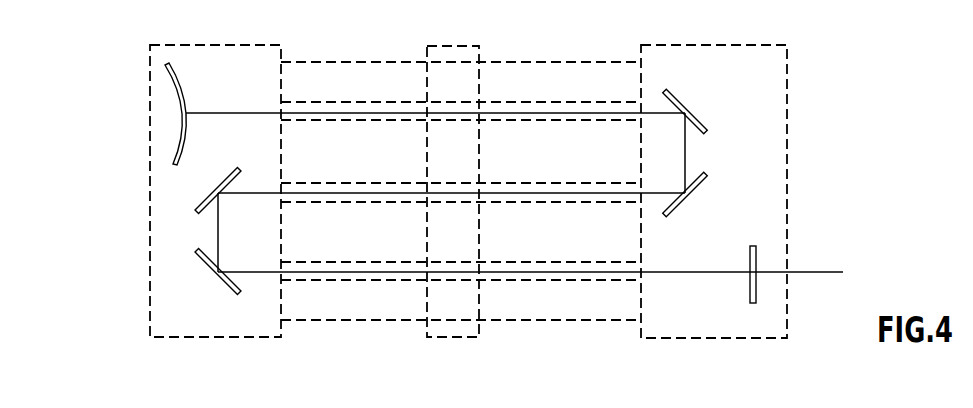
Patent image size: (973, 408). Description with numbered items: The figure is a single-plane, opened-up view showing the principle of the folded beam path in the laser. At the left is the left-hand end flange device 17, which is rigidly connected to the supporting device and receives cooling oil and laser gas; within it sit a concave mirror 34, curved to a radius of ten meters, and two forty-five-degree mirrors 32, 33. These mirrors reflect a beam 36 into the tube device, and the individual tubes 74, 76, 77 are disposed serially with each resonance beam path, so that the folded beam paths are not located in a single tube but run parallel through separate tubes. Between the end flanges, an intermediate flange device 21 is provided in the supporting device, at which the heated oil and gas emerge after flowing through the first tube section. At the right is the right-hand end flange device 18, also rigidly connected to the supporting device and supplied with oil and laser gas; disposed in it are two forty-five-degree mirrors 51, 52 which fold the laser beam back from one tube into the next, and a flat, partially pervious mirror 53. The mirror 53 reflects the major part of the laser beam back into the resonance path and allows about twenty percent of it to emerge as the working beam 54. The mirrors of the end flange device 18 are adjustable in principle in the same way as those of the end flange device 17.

The left-hand end flange device 17 is at (206, 57).
The right-hand end flange device 18 is at (787, 120).
The intermediate flange device 21 is at (430, 333).
The 45° mirror 32 is at (212, 273).
The 45° mirror 33 is at (206, 193).
The concave mirror 34 is at (173, 90).
The beam 36 is at (233, 112).
The 45° mirror 51 is at (684, 105).
The 45° mirror 52 is at (700, 193).
The partially pervious mirror 53 is at (757, 248).
The working beam 54 is at (812, 275).
The tube 74 is at (366, 100).
The tube 76 is at (368, 182).
The tube 77 is at (352, 281).